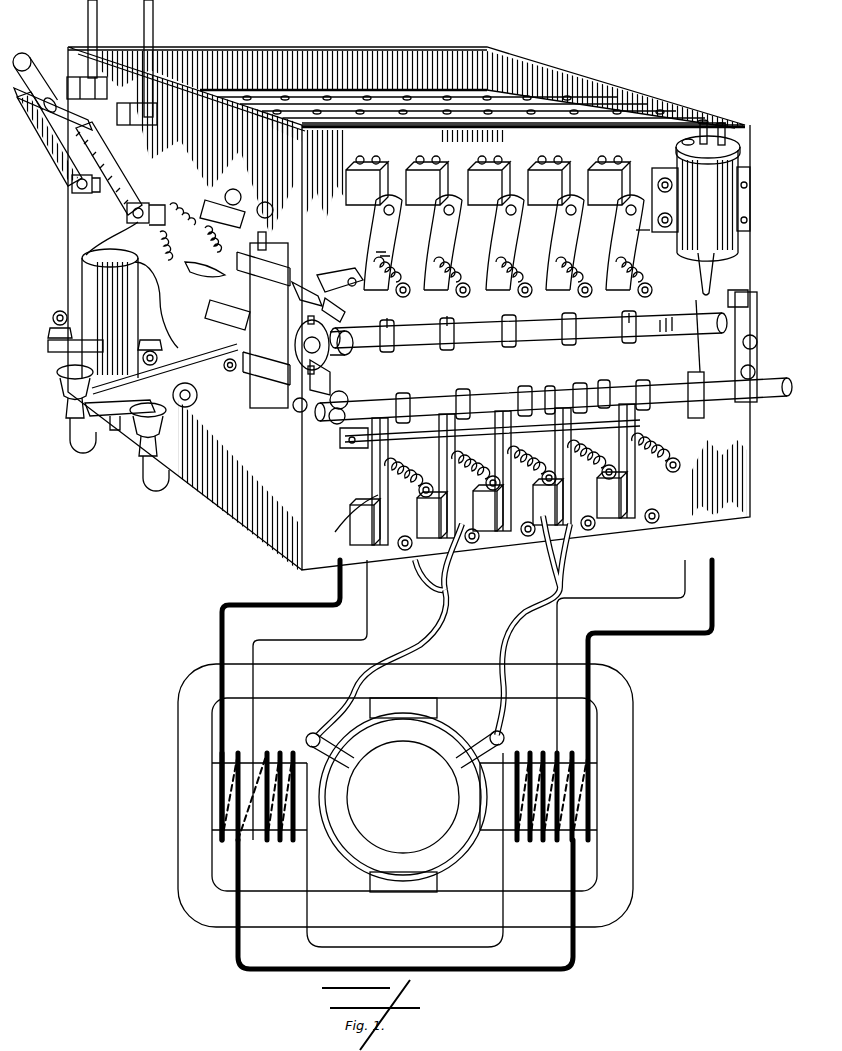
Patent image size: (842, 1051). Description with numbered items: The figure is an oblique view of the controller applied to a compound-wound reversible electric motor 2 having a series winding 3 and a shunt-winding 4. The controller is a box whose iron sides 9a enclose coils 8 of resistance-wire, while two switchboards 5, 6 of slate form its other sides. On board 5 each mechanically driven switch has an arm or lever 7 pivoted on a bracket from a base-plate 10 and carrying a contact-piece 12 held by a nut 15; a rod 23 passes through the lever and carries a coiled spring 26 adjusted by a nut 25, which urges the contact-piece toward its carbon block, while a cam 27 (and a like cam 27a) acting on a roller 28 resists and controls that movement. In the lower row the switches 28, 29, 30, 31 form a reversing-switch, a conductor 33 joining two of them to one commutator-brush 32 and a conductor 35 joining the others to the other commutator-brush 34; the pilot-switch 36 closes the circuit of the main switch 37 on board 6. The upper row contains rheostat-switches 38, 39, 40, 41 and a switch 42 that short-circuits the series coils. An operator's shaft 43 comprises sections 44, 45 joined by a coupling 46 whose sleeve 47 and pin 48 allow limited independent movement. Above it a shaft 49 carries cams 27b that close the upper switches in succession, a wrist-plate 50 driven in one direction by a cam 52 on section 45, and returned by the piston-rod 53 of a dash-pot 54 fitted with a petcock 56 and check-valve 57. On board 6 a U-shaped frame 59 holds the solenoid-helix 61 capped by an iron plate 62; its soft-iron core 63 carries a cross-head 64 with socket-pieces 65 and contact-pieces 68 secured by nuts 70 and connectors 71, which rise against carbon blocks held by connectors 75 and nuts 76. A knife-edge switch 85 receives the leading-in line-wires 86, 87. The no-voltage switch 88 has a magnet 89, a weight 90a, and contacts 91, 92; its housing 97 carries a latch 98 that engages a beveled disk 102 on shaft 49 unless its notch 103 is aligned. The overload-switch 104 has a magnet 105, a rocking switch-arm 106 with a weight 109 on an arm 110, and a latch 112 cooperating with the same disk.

The electric motor 2 is at (622, 755).
The series winding 3 is at (590, 790).
The shunt-winding 4 is at (428, 795).
The switchboard 5 is at (526, 347).
The switchboard 6 is at (185, 308).
The arm or lever 7 is at (504, 242).
The coils of resistance-wire 8 is at (370, 92).
The sides of box 9a is at (243, 48).
The base-plate 10 is at (388, 249).
The contact-piece 12 is at (512, 190).
The nut 15 is at (644, 237).
The rod 23 is at (524, 299).
The nut 25 is at (662, 310).
The coiled spring 26 is at (511, 264).
The cam 27 is at (495, 391).
The end clamp 27a is at (654, 385).
The cams 27b is at (515, 338).
The roller 28 is at (478, 417).
The switch 29 is at (504, 511).
The switch 30 is at (458, 572).
The switch 31 is at (532, 545).
The commutator-brush 32 is at (382, 787).
The conductor 33 is at (382, 662).
The commutator-brush 34 is at (480, 734).
The conductor 35 is at (523, 661).
The pilot-switch 36 is at (650, 494).
The main switch 37 is at (55, 352).
The rheostat-switch 38 is at (367, 172).
The rheostat-switch 39 is at (427, 172).
The rheostat-switch 40 is at (489, 172).
The rheostat-switch 41 is at (549, 172).
The switch 42 is at (609, 172).
The shaft 43 is at (546, 390).
The shaft section 44 is at (490, 426).
The shaft section 45 is at (700, 392).
The coupling 46 is at (606, 380).
The sleeve 47 is at (312, 345).
The pin 48 is at (333, 310).
The shaft 49 is at (690, 318).
The wrist-plate 50 is at (740, 339).
The cam 52 is at (698, 359).
The piston-rod 53 is at (712, 266).
The dash-pot 54 is at (701, 198).
The petcock 56 is at (730, 130).
The check-valve 57 is at (704, 120).
The U-shaped frame 59 is at (156, 305).
The solenoid-helix 61 is at (110, 318).
The iron plate 62 is at (110, 250).
The soft-iron core 63 is at (100, 416).
The cross-head 64 is at (116, 430).
The socket-pieces 65 is at (62, 394).
The contact-piece 68 is at (60, 380).
The nut 70 is at (66, 430).
The connector 71 is at (72, 448).
The connector 75 is at (60, 311).
The nut 76 is at (48, 330).
The knife-edge switch 85 is at (120, 158).
The leading-in line-wire 86 is at (153, 22).
The leading-in line-wire 87 is at (88, 18).
The no-voltage switch 88 is at (144, 229).
The magnet 89 is at (265, 202).
The weight 90a is at (210, 272).
The contact-point 91 is at (216, 239).
The contact-piece 92 is at (266, 240).
The housing 97 is at (335, 271).
The latch 98 is at (315, 294).
The disk 102 is at (347, 332).
The notch 103 is at (311, 345).
The overload-switch 104 is at (252, 408).
The magnet 105 is at (210, 308).
The rocking switch-arm 106 is at (228, 372).
The weight 109 is at (192, 405).
The arm 110 is at (165, 369).
The latch 112 is at (316, 392).